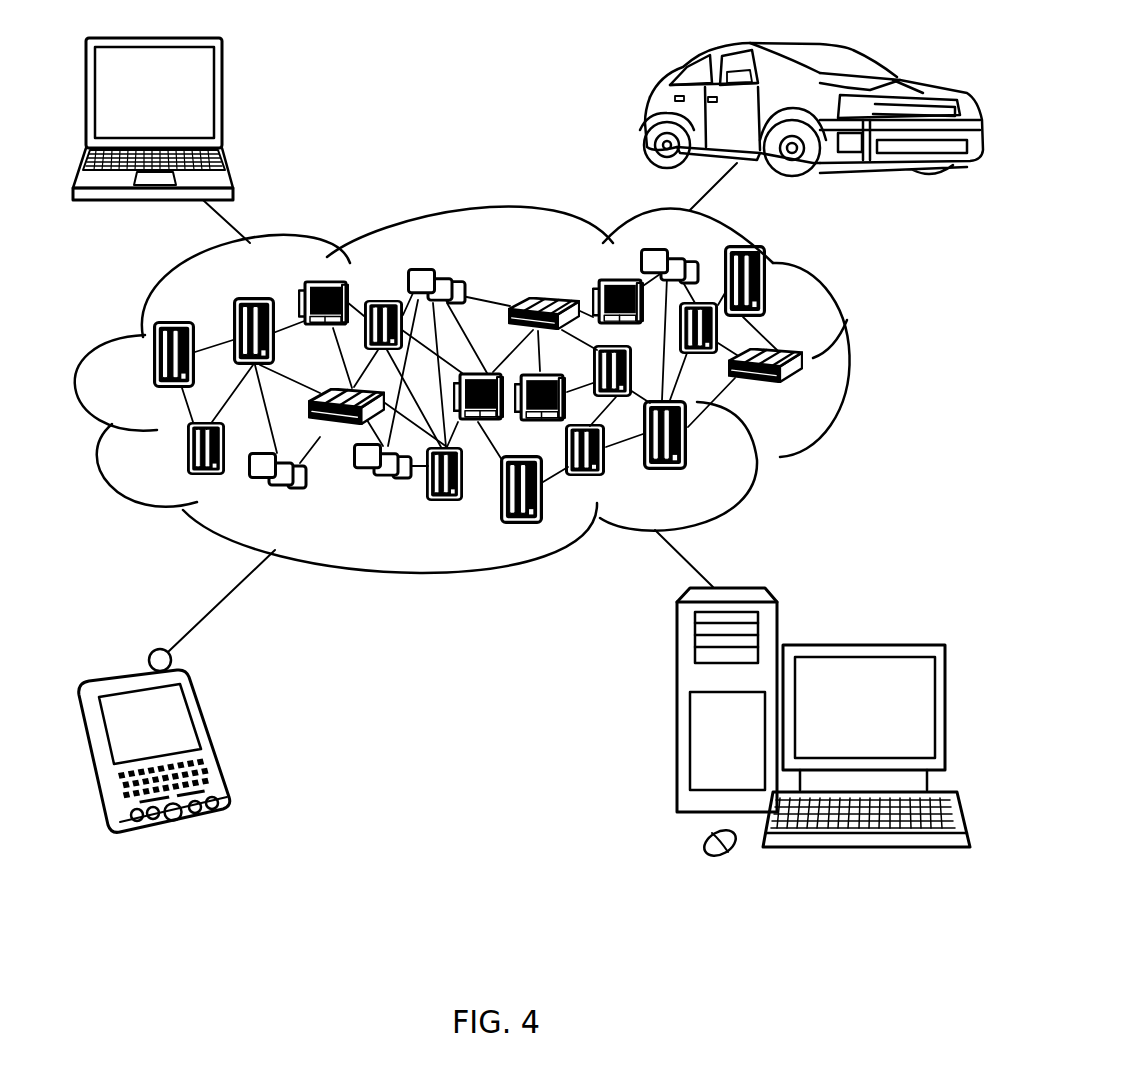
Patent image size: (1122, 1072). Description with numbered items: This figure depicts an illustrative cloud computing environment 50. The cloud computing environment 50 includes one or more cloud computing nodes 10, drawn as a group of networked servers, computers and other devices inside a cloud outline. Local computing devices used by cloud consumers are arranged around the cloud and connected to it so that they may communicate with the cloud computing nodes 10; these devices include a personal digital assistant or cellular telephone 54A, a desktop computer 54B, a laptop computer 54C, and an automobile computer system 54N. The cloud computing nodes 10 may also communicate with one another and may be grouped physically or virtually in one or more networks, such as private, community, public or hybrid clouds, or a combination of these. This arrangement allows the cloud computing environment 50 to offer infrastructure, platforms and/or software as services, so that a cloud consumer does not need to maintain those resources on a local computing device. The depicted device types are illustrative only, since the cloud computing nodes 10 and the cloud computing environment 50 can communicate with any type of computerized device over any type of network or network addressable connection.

The cloud computing environment 50 is at (860, 362).
The cloud computing nodes 10 is at (806, 396).
The personal digital assistant (PDA) or cellular telephone 54A is at (210, 737).
The desktop computer 54B is at (860, 646).
The laptop computer 54C is at (222, 100).
The automobile computer system 54N is at (645, 108).